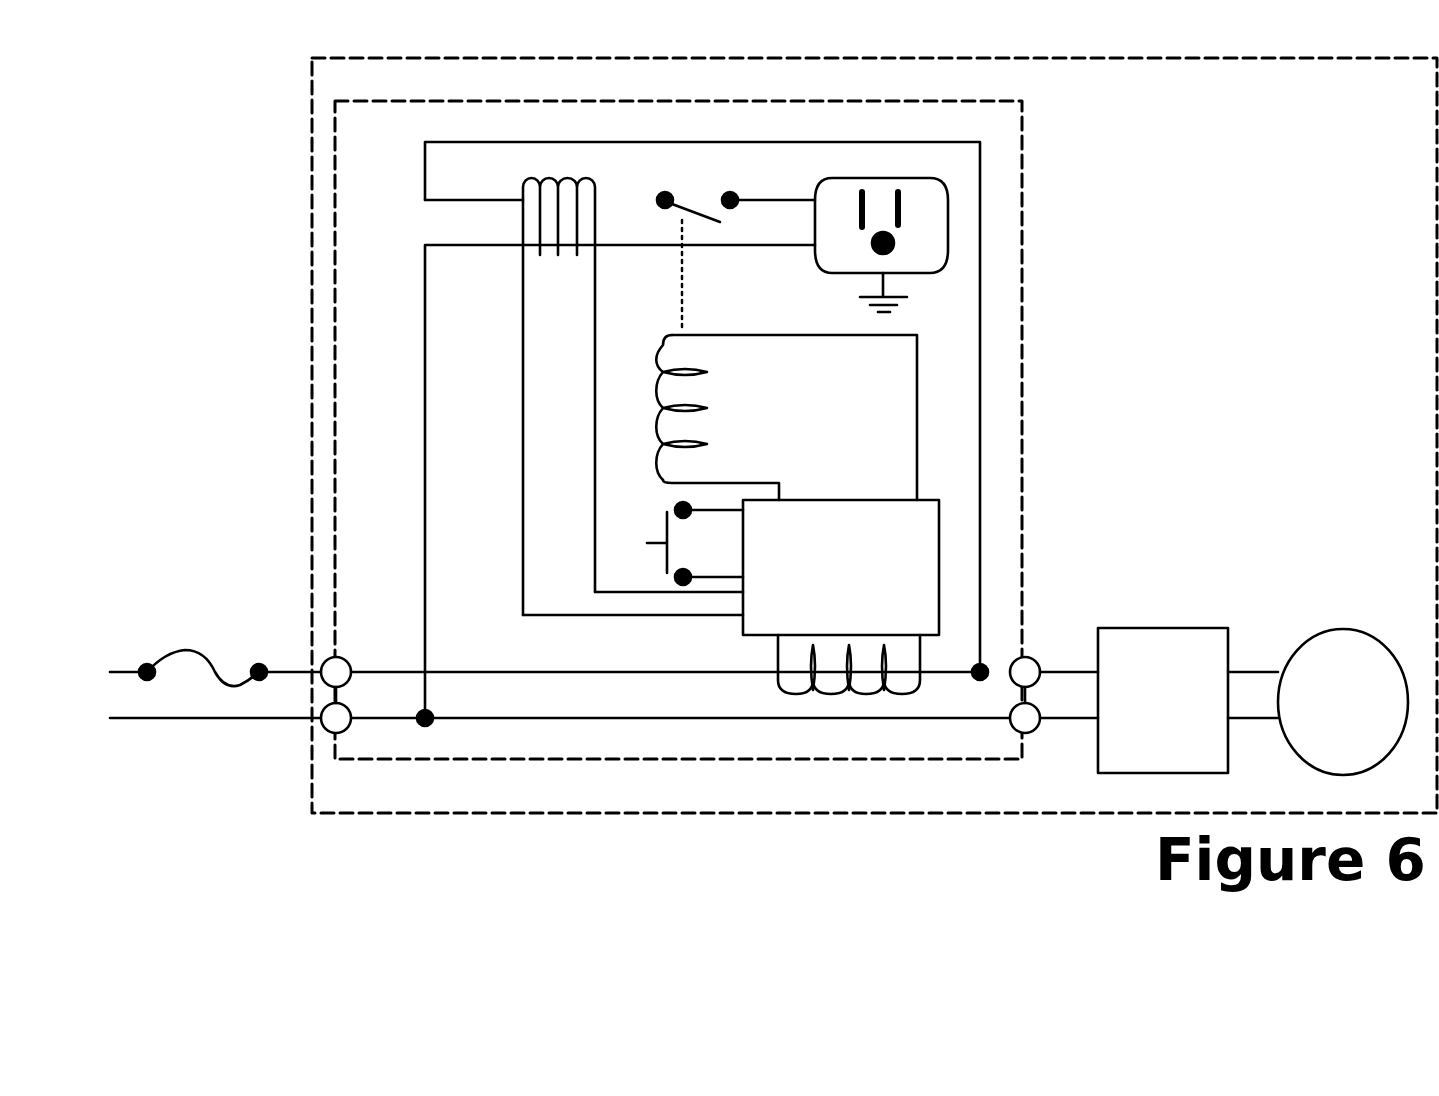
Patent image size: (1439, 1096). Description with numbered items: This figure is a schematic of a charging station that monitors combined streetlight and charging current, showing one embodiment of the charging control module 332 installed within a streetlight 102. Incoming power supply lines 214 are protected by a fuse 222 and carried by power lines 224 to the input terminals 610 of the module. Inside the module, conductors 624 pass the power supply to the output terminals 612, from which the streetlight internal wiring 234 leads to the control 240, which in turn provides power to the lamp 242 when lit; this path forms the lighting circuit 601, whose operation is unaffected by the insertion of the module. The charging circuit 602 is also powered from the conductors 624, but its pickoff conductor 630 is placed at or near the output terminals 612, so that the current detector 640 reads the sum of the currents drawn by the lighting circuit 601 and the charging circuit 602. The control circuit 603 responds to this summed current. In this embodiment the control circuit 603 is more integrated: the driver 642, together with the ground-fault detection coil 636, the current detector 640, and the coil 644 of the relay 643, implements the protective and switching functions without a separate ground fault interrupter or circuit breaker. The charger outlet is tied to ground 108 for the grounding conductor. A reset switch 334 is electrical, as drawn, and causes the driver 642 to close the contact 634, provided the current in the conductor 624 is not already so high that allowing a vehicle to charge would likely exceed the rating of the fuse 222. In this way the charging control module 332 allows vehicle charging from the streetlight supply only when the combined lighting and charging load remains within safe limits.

The streetlight 102 is at (430, 57).
The charging control module 332 is at (580, 100).
The charging circuit 602 is at (1058, 283).
The power supply lines 214 is at (121, 674).
The fuse 222 is at (200, 656).
The power lines 224 is at (285, 647).
The conductors 624 is at (578, 662).
The input terminals 610 is at (351, 709).
The output terminals 612 is at (1010, 711).
The ground-fault detection coil 636 is at (523, 192).
The contact 634 is at (693, 210).
The pickoff conductor 630 is at (980, 180).
The ground 108 is at (862, 267).
The control circuit 603 is at (953, 327).
The coil 644 is at (663, 353).
The relay 643 is at (732, 412).
The reset switch 334 is at (662, 533).
The driver 642 is at (940, 552).
The current detector 640 is at (778, 668).
The streetlight internal wiring 234 is at (1055, 673).
The control 240 is at (1173, 628).
The lamp 242 is at (1312, 632).
The lighting circuit 601 is at (1306, 565).